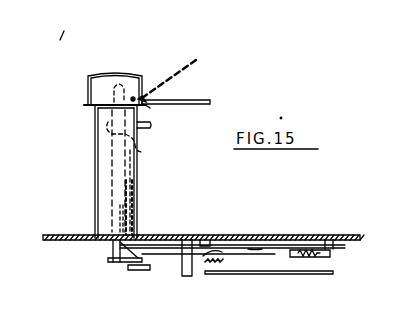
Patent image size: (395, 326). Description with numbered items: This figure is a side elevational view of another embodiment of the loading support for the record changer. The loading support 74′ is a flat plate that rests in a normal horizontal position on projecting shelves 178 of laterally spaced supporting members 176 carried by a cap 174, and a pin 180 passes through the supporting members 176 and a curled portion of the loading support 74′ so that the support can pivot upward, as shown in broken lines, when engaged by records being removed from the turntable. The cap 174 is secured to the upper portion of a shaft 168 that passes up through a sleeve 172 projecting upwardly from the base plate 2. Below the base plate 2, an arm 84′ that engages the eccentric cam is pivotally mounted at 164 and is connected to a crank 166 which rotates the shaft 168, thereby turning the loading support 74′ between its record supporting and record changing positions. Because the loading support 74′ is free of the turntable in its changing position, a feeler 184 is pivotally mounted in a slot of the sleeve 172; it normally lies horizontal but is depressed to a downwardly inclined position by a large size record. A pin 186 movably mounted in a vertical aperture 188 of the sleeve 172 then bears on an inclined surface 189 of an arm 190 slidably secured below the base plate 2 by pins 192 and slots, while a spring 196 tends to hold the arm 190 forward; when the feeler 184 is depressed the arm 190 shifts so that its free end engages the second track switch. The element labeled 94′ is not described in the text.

The base plate 2 is at (268, 240).
The loading support 74′ is at (193, 58).
The arm 84′ is at (272, 274).
The spring 94′ is at (200, 258).
The pivot 164 is at (186, 276).
The crank 166 is at (122, 268).
The shaft 168 is at (108, 254).
The sleeve 172 is at (95, 166).
The cap 174 is at (86, 93).
The supporting members 176 is at (140, 96).
The projecting shelves 178 is at (150, 108).
The pin 180 is at (133, 97).
The feeler 184 is at (150, 125).
The pin 186 is at (134, 194).
The vertical aperture 188 is at (136, 213).
The inclined surface 189 is at (124, 246).
The arm 190 is at (262, 250).
The pins 192 is at (204, 242).
The spring 196 is at (318, 257).